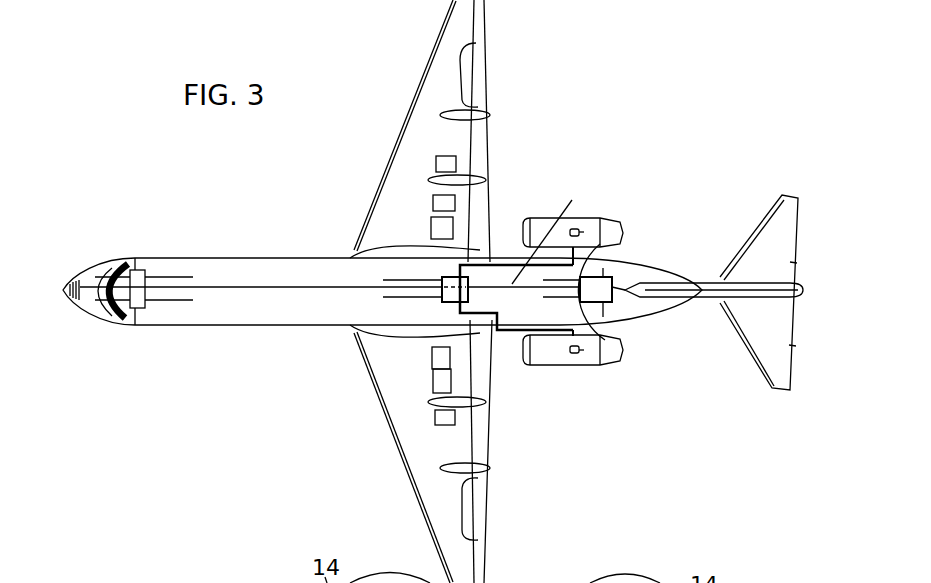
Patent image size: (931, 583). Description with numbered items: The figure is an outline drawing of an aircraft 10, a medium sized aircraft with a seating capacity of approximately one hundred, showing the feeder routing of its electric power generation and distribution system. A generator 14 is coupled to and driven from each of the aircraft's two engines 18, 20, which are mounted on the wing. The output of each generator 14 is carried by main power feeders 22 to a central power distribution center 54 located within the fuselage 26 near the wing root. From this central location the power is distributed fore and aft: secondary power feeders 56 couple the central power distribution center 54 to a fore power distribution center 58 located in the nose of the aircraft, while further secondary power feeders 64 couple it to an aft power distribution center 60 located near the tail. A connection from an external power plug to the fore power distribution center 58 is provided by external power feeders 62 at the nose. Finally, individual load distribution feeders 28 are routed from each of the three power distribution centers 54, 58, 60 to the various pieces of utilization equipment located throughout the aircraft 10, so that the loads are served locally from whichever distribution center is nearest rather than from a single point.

The aircraft 10 is at (195, 372).
The generator 14 is at (580, 218).
The engine 18 is at (538, 215).
The engine 20 is at (532, 364).
The main power feeders 22 is at (490, 262).
The fuselage 26 is at (222, 258).
The load distribution feeders 28 is at (97, 268).
The central power distribution center 54 is at (452, 302).
The secondary power feeders 56 is at (263, 287).
The fore power distribution center 58 is at (143, 270).
The aft power distribution center 60 is at (610, 273).
The external power feeders 62 is at (142, 313).
The secondary power feeders 64 is at (572, 200).